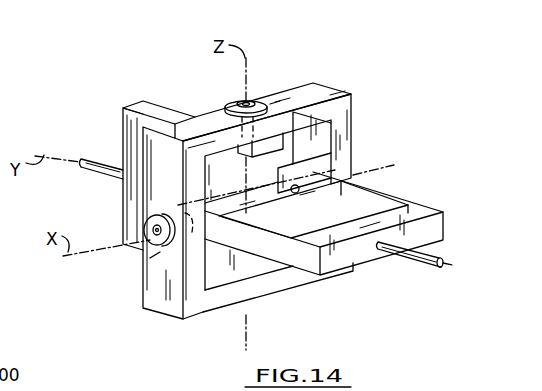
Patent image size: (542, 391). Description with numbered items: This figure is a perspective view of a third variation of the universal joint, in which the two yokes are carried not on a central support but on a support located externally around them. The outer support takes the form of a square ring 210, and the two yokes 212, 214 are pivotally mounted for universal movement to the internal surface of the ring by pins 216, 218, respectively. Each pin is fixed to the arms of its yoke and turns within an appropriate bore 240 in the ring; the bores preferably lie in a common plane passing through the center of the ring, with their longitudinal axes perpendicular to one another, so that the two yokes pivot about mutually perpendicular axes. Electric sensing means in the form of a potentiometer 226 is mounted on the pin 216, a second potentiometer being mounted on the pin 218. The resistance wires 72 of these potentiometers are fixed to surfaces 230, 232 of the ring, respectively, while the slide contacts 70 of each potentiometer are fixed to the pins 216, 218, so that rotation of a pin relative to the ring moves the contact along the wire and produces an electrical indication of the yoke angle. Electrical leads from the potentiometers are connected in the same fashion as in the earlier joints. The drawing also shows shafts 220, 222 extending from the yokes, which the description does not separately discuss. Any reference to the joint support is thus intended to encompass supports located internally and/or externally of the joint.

The square ring 210 is at (354, 113).
The yoke 212 is at (361, 252).
The yoke 214 is at (157, 106).
The pin 216 is at (351, 174).
The pin 218 is at (248, 101).
The shaft 220 is at (424, 258).
The shaft 222 is at (97, 159).
The potentiometer 226 is at (275, 100).
The surface 230 is at (167, 297).
The surface 232 is at (328, 95).
The bores 240 is at (233, 133).
The slide contacts 70 is at (243, 101).
The resistance wires 72 is at (255, 103).